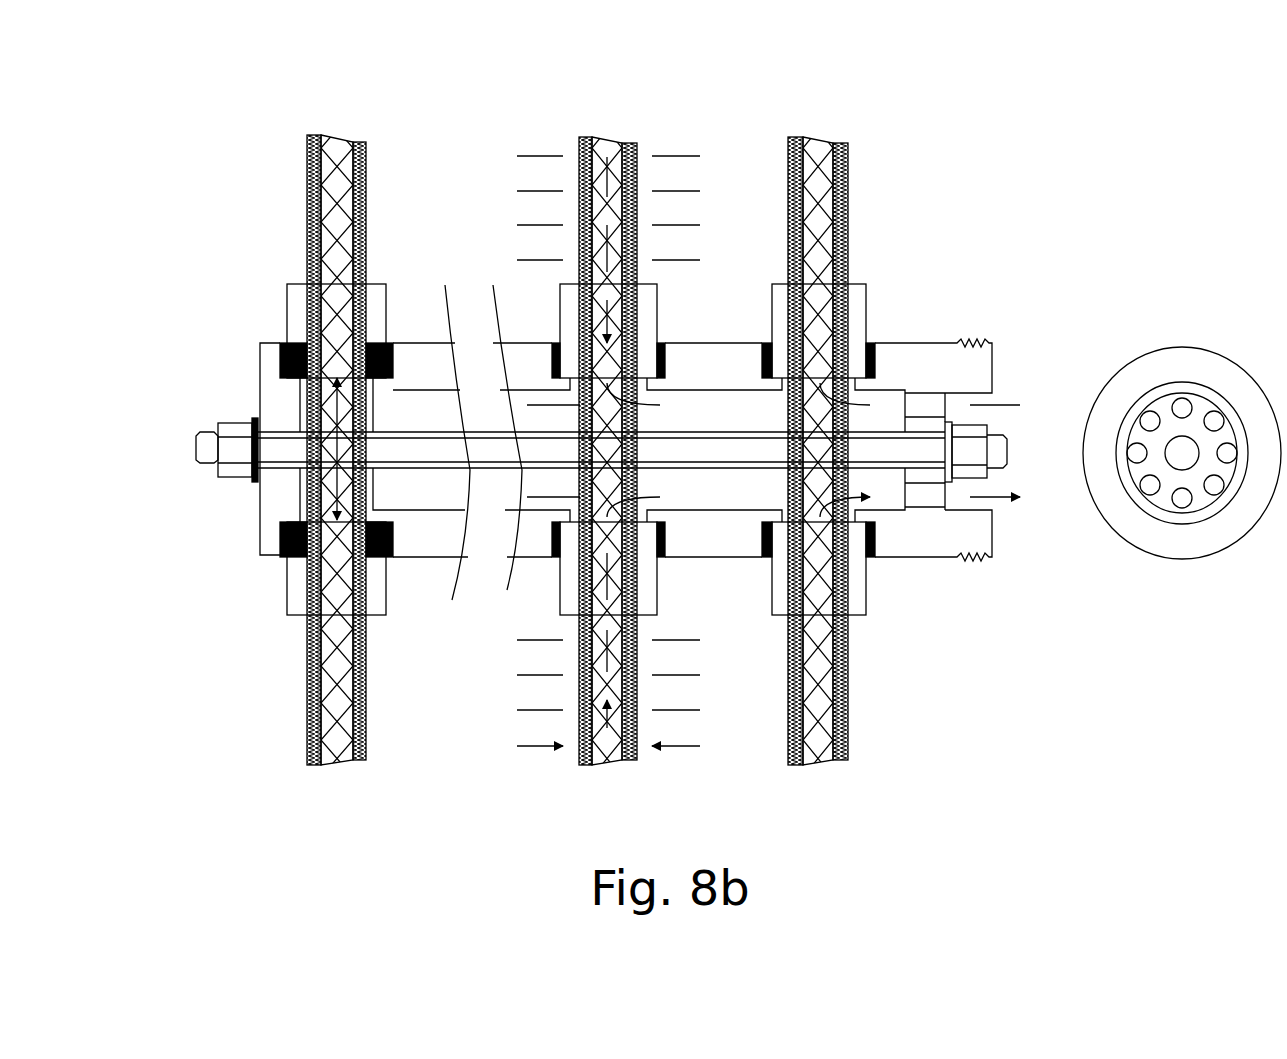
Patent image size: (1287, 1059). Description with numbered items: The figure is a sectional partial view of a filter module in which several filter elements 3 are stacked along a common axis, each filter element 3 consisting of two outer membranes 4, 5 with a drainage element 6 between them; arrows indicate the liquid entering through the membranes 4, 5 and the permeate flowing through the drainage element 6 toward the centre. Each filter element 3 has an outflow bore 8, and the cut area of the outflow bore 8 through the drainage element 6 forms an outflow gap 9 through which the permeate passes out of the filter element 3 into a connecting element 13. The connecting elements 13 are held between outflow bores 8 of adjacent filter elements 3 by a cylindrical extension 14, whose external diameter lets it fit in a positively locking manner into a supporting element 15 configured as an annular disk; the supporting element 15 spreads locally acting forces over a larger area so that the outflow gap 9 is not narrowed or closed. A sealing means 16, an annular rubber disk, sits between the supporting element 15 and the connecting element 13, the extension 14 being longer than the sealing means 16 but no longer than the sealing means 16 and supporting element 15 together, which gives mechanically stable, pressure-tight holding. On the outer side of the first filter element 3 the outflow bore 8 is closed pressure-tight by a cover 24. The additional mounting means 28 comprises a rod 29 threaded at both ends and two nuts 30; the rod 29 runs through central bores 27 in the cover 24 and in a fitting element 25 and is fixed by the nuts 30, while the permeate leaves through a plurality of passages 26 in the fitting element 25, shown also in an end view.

The filter element 3 is at (637, 127).
The membrane 4 is at (308, 172).
The membrane 5 is at (365, 170).
The drainage element 6 is at (337, 137).
The outflow bore 8 is at (337, 482).
The outflow gap 9 is at (340, 368).
The connecting element 13 is at (417, 368).
The extension 14 is at (385, 515).
The supporting element 15 is at (298, 597).
The sealing means 16 is at (283, 553).
The cover 24 is at (272, 387).
The fitting element 25 is at (1183, 347).
The passages 26 is at (1170, 397).
The central bore 27 is at (260, 418).
The mounting means 28 is at (185, 415).
The rod 29 is at (1008, 455).
The nut 30 is at (227, 470).